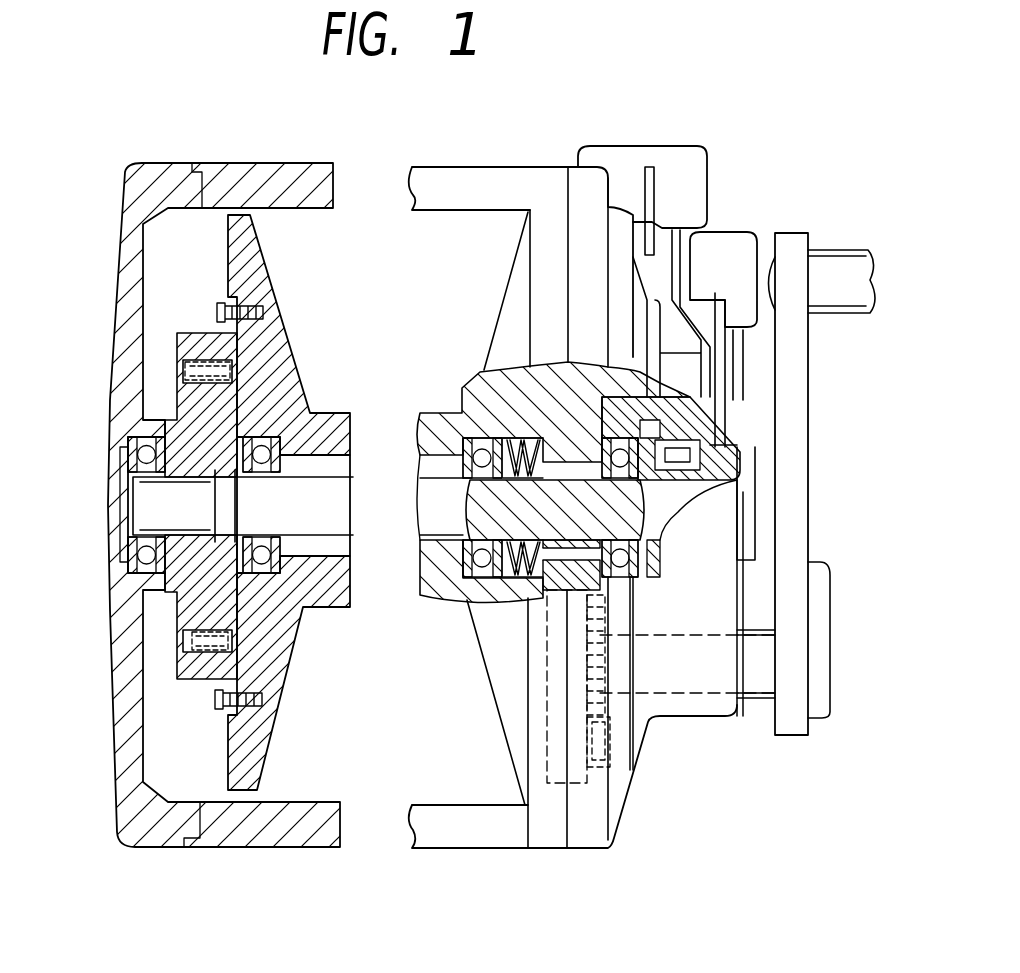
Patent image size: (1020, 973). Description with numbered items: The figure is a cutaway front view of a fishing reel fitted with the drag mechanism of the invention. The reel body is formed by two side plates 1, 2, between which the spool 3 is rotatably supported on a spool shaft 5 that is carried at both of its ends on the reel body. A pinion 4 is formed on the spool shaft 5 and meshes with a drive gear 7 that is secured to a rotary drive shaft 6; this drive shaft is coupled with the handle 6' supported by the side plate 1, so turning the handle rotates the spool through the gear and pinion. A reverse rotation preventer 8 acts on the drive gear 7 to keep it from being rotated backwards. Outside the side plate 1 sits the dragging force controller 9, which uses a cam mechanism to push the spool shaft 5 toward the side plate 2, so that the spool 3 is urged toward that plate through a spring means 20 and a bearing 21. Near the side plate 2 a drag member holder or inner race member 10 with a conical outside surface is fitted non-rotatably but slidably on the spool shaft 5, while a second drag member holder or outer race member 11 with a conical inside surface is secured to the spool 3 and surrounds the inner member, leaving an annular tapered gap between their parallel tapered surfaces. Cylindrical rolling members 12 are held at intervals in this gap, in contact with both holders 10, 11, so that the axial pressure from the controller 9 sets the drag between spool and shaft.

The side plate 1 is at (578, 185).
The side plate 2 is at (162, 164).
The spool 3 is at (262, 290).
The pinion 4 is at (472, 388).
The spool shaft 5 is at (447, 590).
The rotary drive shaft 6 is at (687, 630).
The handle 6' is at (829, 484).
The drive gear 7 is at (603, 598).
The reverse rotation preventer 8 is at (612, 770).
The dragging force controller 9 is at (712, 392).
The drag member holder 10 is at (185, 607).
The drag member holder 11 is at (182, 338).
The cylindrical rolling members 12 is at (180, 373).
The spring means 20 is at (512, 598).
The bearing 21 is at (490, 598).